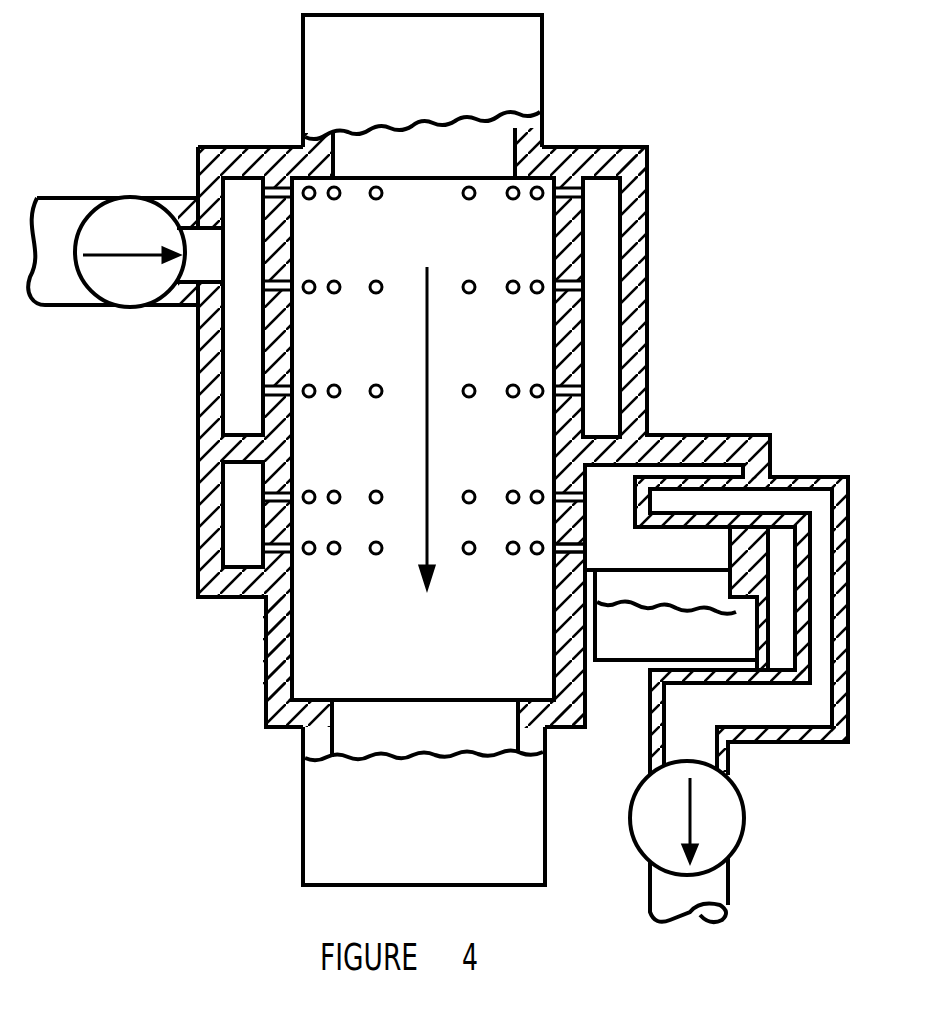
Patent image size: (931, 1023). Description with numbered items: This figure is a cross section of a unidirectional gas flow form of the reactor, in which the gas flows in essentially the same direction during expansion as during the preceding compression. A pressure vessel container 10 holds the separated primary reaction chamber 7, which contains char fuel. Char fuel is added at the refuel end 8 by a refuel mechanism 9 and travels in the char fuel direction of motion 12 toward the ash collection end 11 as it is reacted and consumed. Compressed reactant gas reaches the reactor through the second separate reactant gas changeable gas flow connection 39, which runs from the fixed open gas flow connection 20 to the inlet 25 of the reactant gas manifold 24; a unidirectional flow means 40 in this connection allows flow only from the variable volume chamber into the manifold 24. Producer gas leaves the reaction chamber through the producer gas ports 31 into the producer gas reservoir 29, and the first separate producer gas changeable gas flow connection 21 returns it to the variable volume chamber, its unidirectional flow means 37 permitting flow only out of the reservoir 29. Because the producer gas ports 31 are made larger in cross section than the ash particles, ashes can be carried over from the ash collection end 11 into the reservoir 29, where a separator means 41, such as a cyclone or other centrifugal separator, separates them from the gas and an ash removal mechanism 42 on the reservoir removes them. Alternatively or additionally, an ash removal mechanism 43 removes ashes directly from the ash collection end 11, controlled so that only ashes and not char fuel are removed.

The primary reaction chamber 7 is at (443, 193).
The refuel end 8 is at (377, 213).
The refuel mechanism 9 is at (340, 40).
The pressure vessel container 10 is at (196, 367).
The ash collection end 11 is at (412, 680).
The char fuel direction of motion 12 is at (430, 408).
The gas flow connection 20 is at (63, 227).
The producer gas changeable gas flow connection 21 is at (697, 897).
The reactant gas manifold 24 is at (235, 412).
The inlet 25 is at (243, 262).
The producer gas reservoir 29 is at (633, 545).
The producer gas ports 31 is at (260, 552).
The unidirectional flow means 37 is at (717, 837).
The reactant gas changeable gas flow connection 39 is at (217, 247).
The unidirectional flow means 40 is at (130, 223).
The separator means 41 is at (683, 508).
The ash removal mechanism 42 is at (667, 638).
The ash removal mechanism 43 is at (330, 858).